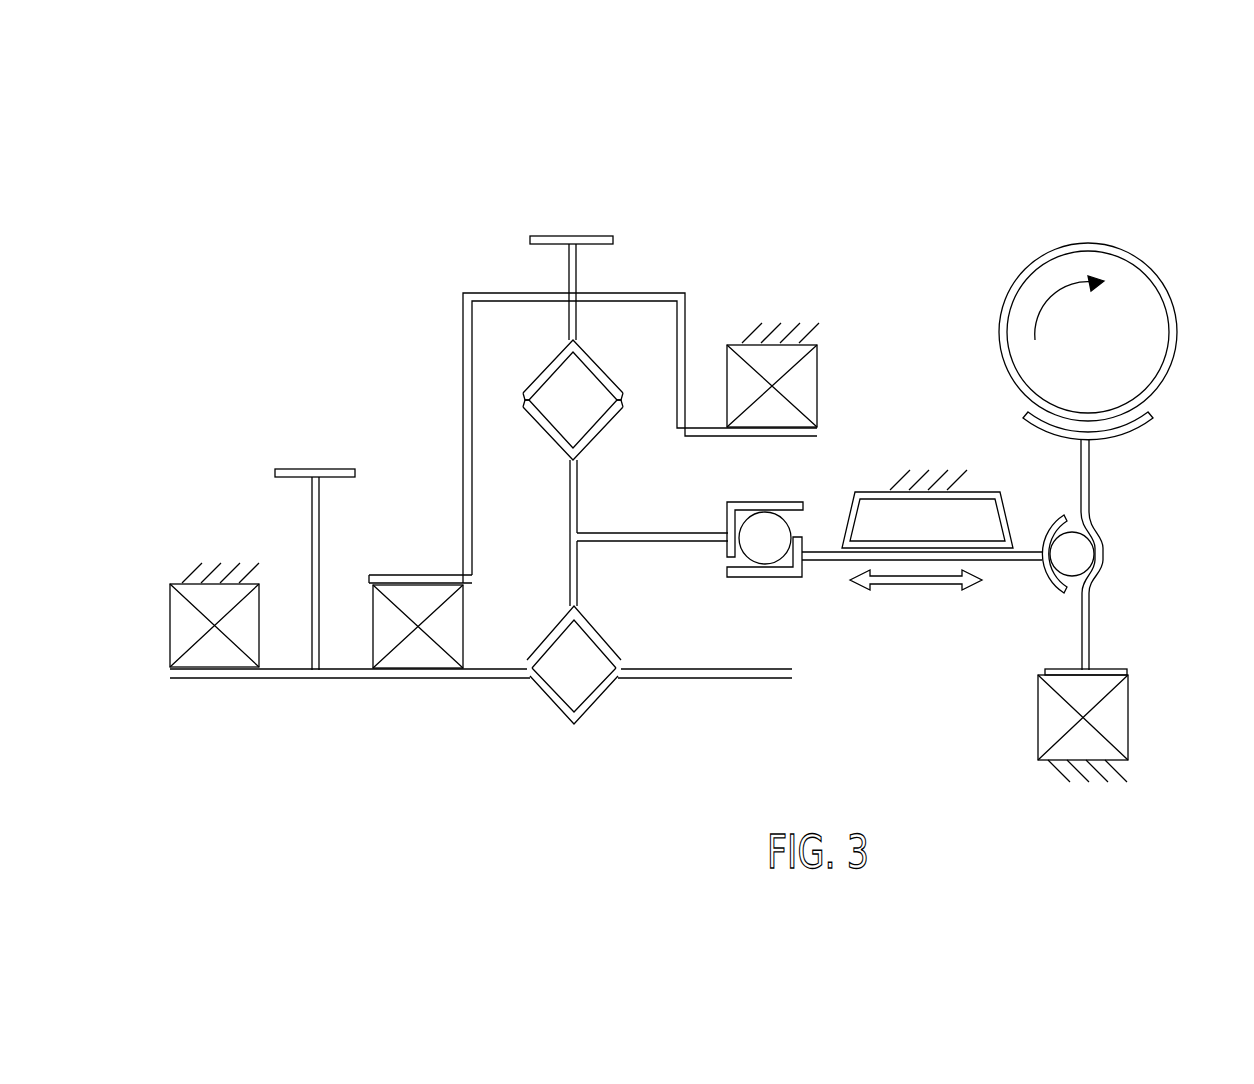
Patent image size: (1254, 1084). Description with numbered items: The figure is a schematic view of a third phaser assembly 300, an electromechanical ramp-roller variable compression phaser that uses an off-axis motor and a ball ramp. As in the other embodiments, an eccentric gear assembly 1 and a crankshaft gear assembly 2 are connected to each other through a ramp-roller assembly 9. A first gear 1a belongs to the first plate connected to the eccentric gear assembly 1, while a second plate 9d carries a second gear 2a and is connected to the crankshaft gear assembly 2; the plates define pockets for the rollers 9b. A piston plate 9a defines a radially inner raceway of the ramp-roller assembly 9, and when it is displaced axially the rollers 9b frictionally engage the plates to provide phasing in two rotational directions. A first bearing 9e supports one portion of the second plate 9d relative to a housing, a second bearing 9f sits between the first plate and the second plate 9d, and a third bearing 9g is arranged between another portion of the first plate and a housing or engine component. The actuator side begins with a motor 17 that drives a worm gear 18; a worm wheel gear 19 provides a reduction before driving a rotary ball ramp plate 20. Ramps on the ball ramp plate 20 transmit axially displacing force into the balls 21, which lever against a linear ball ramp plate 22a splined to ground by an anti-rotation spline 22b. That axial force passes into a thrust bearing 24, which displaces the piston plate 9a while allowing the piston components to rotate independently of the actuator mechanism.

The eccentric gear assembly 1 is at (277, 521).
The first gear 1a is at (298, 469).
The crankshaft gear assembly 2 is at (542, 240).
The second gear 2a is at (585, 236).
The third phaser assembly 300 is at (421, 402).
The ramp-roller assembly 9 is at (567, 406).
The piston plate 9a is at (570, 565).
The rollers 9b is at (552, 390).
The second plate 9d is at (585, 351).
The first bearing 9e is at (778, 352).
The second bearing 9f is at (410, 632).
The third bearing 9g is at (240, 618).
The motor 17 is at (1121, 283).
The worm gear 18 is at (1178, 328).
The worm wheel gear 19 is at (1091, 494).
The rotary ball ramp plate 20 is at (1092, 584).
The balls 21 is at (1087, 557).
The linear ball ramp plate 22a is at (815, 550).
The anti-rotation spline 22b is at (868, 508).
The thrust bearing 24 is at (727, 552).